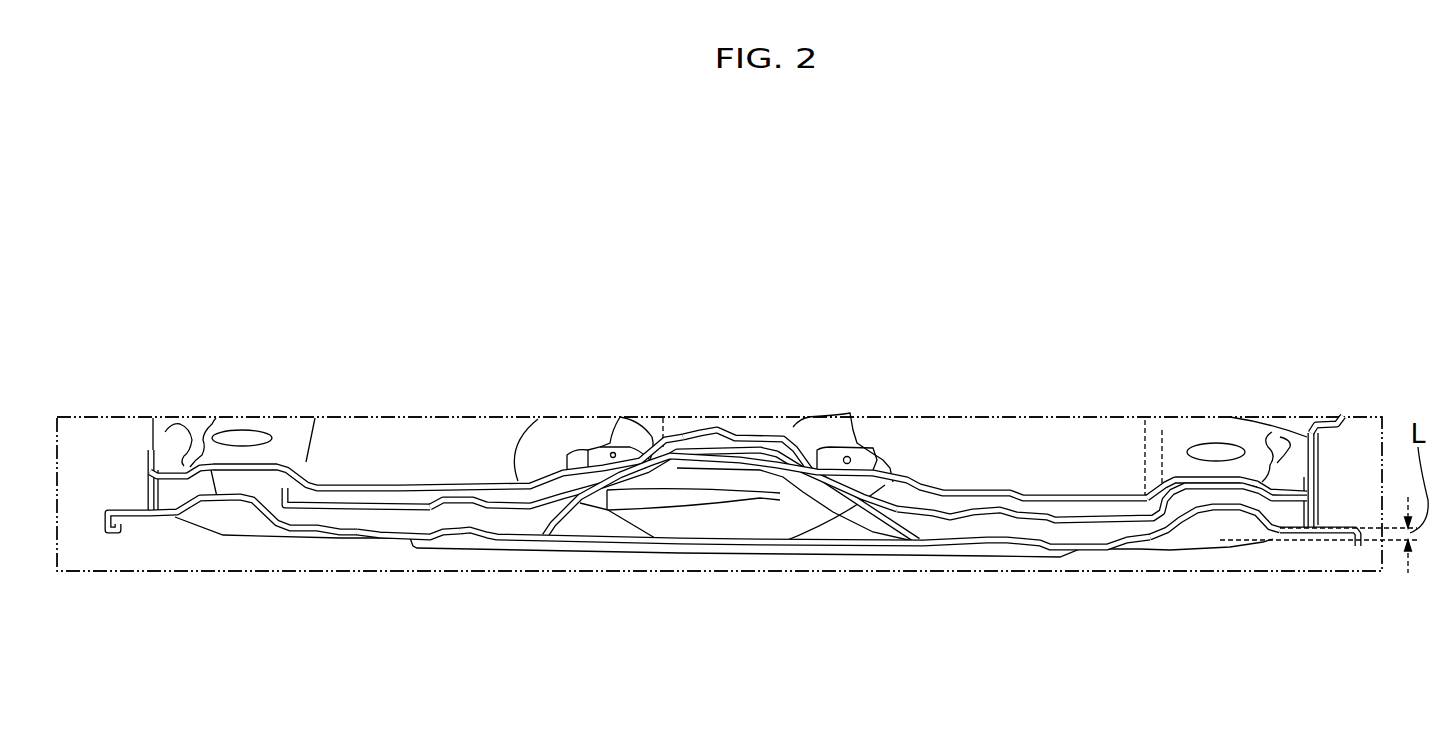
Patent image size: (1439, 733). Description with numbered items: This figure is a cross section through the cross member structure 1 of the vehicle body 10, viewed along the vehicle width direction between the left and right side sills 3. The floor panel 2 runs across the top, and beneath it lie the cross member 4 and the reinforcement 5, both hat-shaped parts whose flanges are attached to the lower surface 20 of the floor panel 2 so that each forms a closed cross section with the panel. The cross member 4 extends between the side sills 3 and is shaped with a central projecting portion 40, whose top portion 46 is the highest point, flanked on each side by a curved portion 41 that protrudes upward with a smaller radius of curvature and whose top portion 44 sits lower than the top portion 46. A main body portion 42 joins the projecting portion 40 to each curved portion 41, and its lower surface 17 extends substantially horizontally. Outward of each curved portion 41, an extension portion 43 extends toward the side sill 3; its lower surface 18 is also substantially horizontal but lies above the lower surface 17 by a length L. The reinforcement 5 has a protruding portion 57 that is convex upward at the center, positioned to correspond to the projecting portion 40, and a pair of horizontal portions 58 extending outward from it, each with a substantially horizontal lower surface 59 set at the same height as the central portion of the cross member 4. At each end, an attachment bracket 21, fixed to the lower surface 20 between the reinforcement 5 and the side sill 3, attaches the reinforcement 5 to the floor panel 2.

The cross member structure 1 is at (1098, 385).
The vehicle body 10 is at (719, 494).
The floor panel 2 is at (413, 443).
The side sill 3 is at (147, 472).
The cross member 4 is at (467, 518).
The reinforcement 5 is at (501, 495).
The lower surface of the main body portion 17 is at (1003, 545).
The lower surface of the extension portion 18 is at (1283, 532).
The lower surface of the floor panel 20 is at (366, 496).
The attachment bracket 21 is at (277, 467).
The projecting portion 40 is at (797, 483).
The curved portion 41 is at (248, 500).
The main body portion 42 is at (410, 522).
The extension portion 43 is at (167, 517).
The top portion of the curved portion 44 is at (211, 468).
The top portion of the projecting portion 46 is at (729, 434).
The protruding portion 57 is at (695, 433).
The horizontal portion 58 is at (428, 502).
The lower surface of the horizontal portion 59 is at (380, 510).